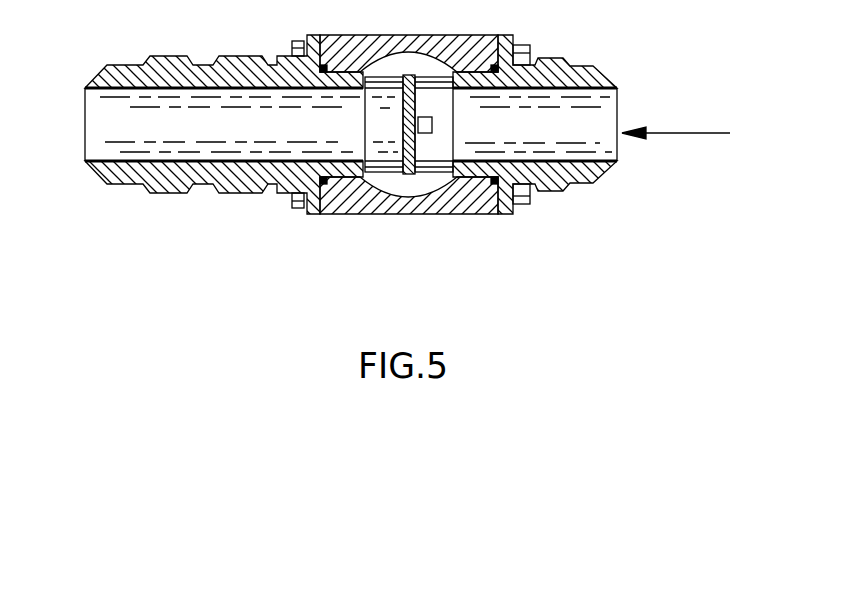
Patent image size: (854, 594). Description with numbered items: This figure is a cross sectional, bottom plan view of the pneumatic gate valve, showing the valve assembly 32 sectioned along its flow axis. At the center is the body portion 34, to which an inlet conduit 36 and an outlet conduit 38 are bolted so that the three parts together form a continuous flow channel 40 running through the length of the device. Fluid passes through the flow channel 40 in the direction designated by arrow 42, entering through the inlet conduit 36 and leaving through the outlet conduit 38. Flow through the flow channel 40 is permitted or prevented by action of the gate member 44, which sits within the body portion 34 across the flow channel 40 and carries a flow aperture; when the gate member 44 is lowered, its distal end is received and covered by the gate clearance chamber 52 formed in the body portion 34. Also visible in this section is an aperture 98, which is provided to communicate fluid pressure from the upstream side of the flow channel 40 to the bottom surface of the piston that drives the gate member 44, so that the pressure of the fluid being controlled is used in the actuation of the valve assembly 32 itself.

The valve assembly 32 is at (273, 47).
The body portion 34 is at (352, 208).
The inlet conduit 36 is at (547, 57).
The outlet conduit 38 is at (245, 173).
The flow channel 40 is at (126, 123).
The fluid flow arrow 42 is at (676, 110).
The gate member 44 is at (395, 118).
The gate clearance chamber 52 is at (426, 176).
The aperture 98 is at (433, 125).